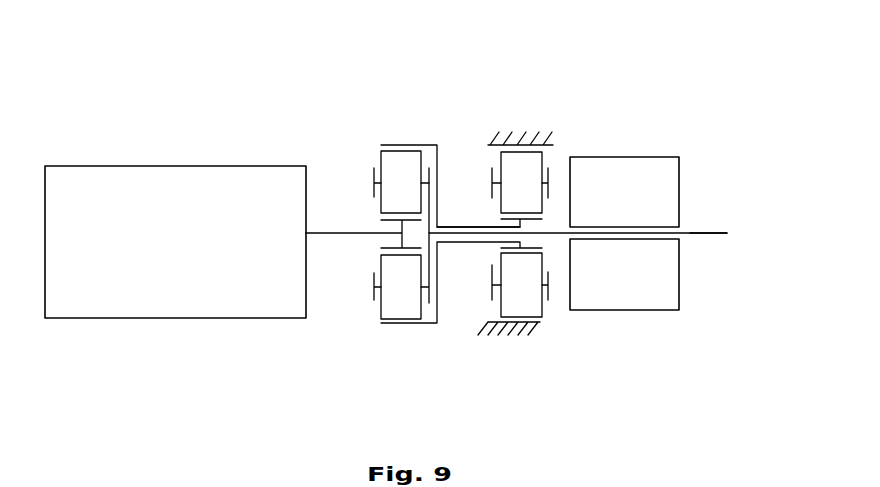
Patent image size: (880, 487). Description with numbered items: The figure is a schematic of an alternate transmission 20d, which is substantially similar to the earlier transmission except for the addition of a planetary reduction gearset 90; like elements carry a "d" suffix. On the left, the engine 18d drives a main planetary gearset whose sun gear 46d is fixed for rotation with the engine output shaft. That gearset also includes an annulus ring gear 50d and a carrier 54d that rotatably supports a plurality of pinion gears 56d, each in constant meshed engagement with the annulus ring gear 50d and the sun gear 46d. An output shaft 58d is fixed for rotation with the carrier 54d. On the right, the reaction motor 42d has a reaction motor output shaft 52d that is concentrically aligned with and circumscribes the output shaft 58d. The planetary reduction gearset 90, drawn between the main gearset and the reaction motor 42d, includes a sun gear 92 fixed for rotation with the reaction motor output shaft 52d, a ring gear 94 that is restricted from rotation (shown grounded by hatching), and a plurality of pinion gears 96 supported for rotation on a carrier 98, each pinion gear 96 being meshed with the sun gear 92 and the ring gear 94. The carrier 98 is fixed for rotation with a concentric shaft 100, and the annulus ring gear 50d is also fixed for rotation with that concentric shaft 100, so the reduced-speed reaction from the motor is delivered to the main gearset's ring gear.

The engine 18d is at (172, 166).
The transmission 20d is at (634, 83).
The reaction motor 42d is at (679, 177).
The sun gear 46d is at (388, 216).
The annulus ring gear 50d is at (388, 145).
The reaction motor output shaft 52d is at (562, 225).
The carrier 54d is at (373, 287).
The pinion gears 56d is at (390, 161).
The output shaft 58d is at (712, 237).
The planetary reduction gearset 90 is at (519, 99).
The sun gear 92 is at (533, 254).
The ring gear 94 is at (490, 147).
The pinion gears 96 is at (492, 310).
The carrier 98 is at (491, 262).
The concentric shaft 100 is at (460, 226).